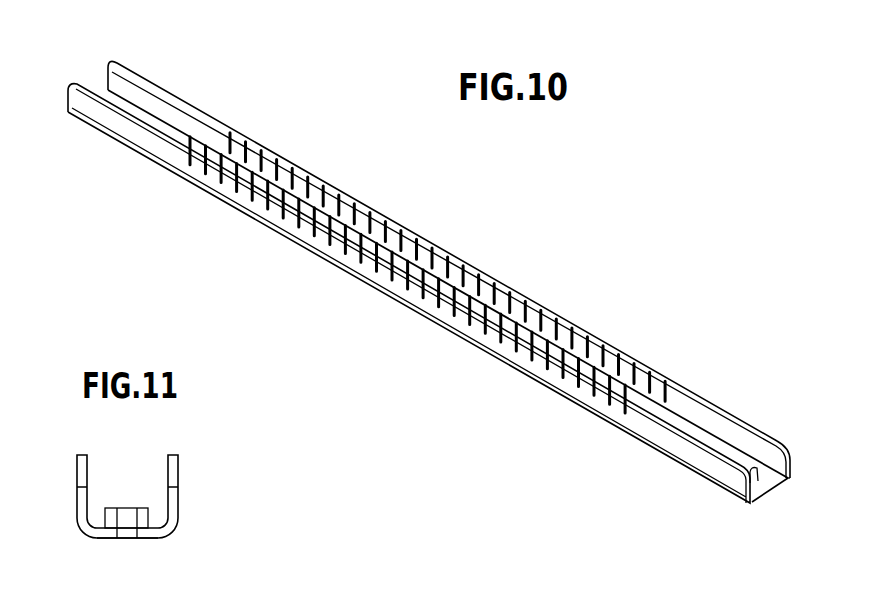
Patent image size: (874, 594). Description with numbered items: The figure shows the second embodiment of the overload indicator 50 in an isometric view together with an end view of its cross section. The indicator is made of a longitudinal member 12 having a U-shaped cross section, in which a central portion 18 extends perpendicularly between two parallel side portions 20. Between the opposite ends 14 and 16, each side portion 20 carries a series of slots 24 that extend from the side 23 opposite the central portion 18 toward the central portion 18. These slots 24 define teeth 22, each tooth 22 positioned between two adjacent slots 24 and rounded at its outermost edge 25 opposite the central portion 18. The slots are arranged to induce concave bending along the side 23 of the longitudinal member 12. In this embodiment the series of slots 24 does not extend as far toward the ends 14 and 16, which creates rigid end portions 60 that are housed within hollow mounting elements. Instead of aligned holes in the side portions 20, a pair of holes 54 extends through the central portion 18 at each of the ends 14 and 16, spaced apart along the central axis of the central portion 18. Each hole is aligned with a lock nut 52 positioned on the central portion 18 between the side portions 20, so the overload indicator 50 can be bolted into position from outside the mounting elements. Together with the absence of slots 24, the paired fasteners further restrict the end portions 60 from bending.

In FIG. 10, the longitudinal member 12 is at (258, 225).
In FIG. 10, the end 14 is at (80, 83).
In FIG. 10, the end 16 is at (762, 494).
In FIG. 10, the central portion 18 is at (630, 403).
In FIG. 11, the central portion 18 is at (152, 540).
In FIG. 10, the side portions 20 is at (300, 236).
In FIG. 11, the side portions 20 is at (77, 473).
In FIG. 10, the teeth 22 is at (577, 326).
In FIG. 10, the side 23 is at (497, 262).
In FIG. 11, the side 23 is at (80, 456).
In FIG. 10, the slots 24 is at (482, 328).
In FIG. 10, the outermost edge 25 is at (378, 212).
In FIG. 10, the overload indicator 50 is at (462, 216).
In FIG. 11, the lock nut 52 is at (150, 518).
In FIG. 11, the holes 54 is at (123, 539).
In FIG. 10, the rigid end portions 60 is at (100, 116).